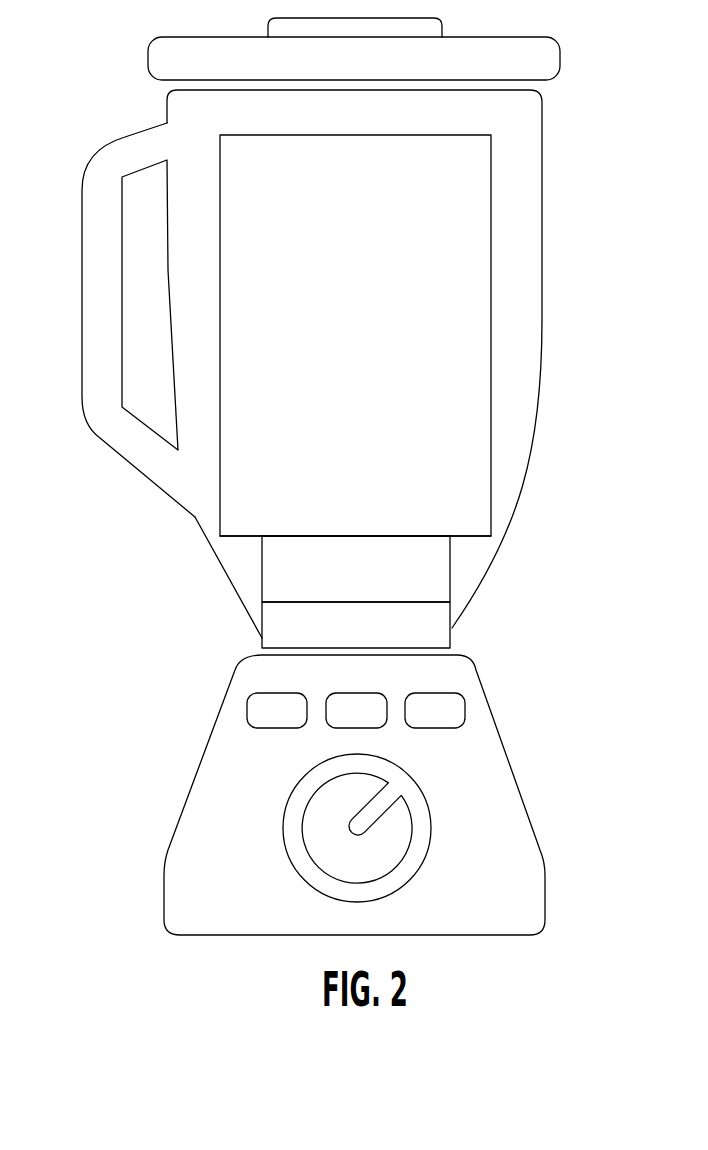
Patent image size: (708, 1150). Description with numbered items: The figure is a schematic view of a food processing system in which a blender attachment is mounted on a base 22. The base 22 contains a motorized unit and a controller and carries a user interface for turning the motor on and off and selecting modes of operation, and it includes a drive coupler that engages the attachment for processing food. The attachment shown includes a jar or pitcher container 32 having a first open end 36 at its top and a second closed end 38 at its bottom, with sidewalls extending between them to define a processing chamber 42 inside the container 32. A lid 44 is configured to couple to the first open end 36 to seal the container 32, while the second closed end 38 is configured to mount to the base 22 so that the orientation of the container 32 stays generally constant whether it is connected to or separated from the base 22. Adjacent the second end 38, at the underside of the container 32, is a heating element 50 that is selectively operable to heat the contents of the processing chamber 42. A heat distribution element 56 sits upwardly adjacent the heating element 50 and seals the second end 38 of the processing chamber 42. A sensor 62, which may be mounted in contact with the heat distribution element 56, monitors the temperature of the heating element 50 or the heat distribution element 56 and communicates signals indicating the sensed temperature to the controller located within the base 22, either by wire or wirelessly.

The base 22 is at (519, 778).
The container 32 is at (520, 262).
The first open end 36 is at (178, 89).
The second closed end 38 is at (262, 638).
The processing chamber 42 is at (357, 284).
The lid 44 is at (537, 55).
The heating element 50 is at (450, 572).
The heat distribution element 56 is at (460, 536).
The sensor 62 is at (452, 627).